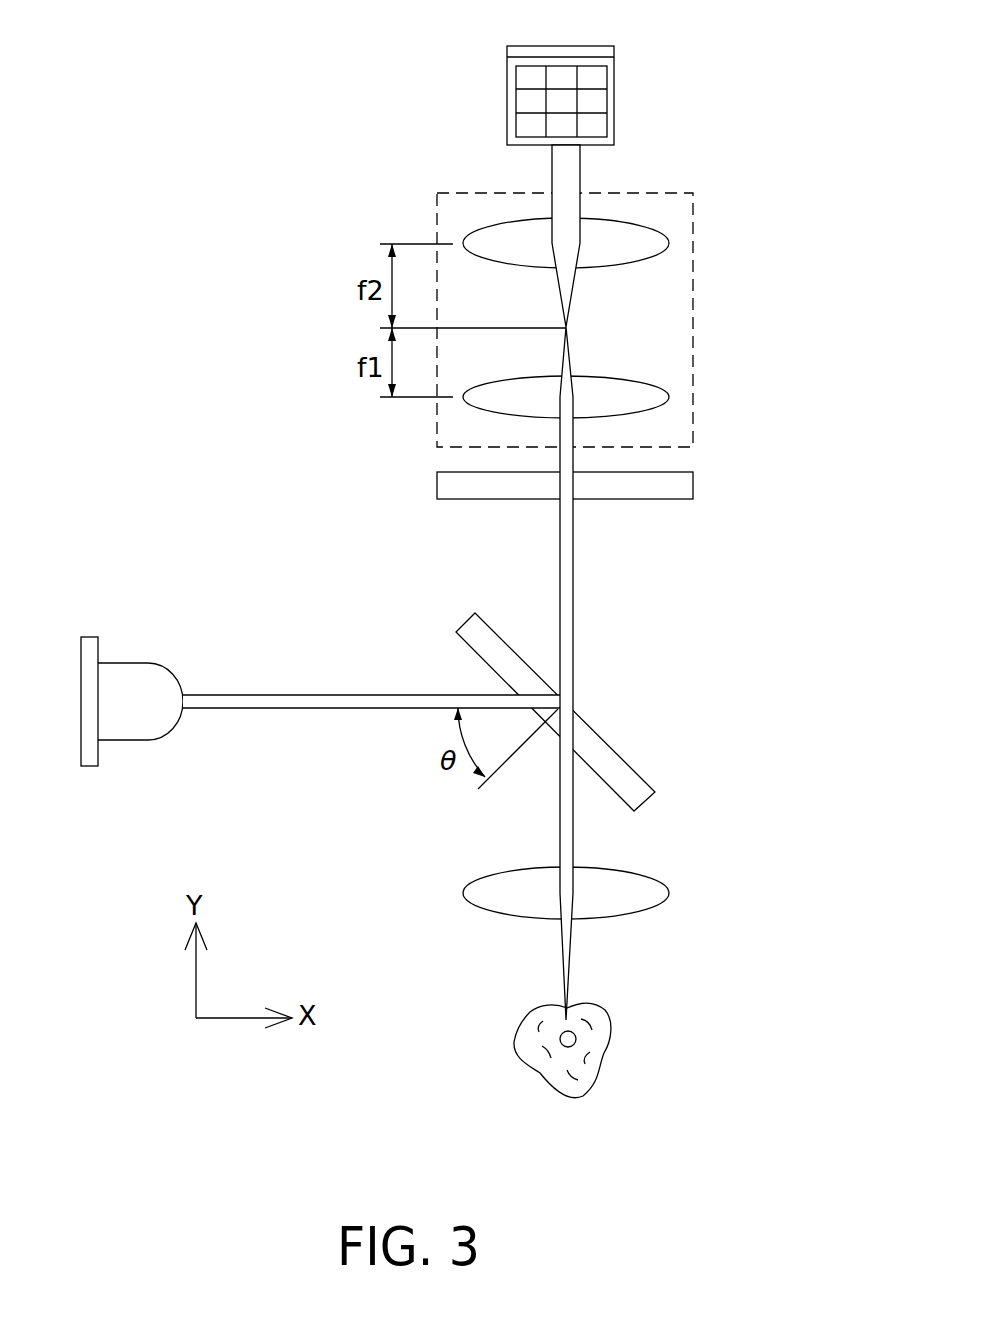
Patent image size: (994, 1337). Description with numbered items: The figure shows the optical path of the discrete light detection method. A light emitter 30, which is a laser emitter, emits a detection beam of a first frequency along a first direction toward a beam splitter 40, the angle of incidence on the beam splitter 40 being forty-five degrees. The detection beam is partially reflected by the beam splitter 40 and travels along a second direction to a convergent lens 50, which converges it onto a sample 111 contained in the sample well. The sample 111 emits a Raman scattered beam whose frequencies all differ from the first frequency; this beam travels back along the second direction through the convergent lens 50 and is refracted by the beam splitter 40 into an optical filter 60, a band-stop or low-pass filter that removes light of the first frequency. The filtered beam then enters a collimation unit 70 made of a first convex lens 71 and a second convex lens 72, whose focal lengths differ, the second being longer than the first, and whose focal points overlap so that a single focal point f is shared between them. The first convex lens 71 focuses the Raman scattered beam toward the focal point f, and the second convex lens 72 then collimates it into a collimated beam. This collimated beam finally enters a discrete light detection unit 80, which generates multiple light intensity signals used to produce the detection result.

The light emitter 30 is at (143, 668).
The beam splitter 40 is at (630, 775).
The convergent lens 50 is at (649, 893).
The optical filter 60 is at (680, 485).
The collimation unit 70 is at (700, 202).
The first convex lens 71 is at (655, 398).
The second convex lens 72 is at (653, 240).
The discrete light detection unit 80 is at (615, 53).
The sample 111 is at (592, 1069).
The focal point f is at (582, 325).